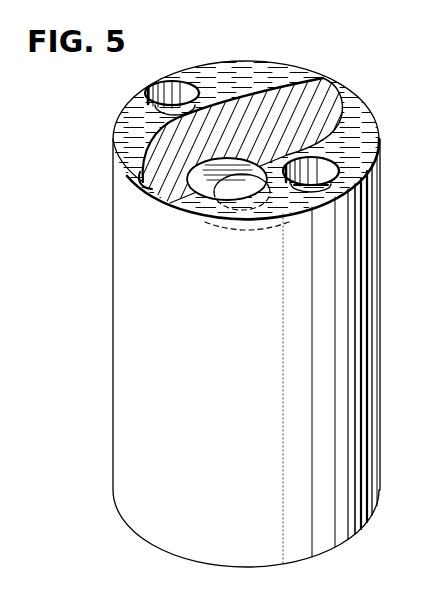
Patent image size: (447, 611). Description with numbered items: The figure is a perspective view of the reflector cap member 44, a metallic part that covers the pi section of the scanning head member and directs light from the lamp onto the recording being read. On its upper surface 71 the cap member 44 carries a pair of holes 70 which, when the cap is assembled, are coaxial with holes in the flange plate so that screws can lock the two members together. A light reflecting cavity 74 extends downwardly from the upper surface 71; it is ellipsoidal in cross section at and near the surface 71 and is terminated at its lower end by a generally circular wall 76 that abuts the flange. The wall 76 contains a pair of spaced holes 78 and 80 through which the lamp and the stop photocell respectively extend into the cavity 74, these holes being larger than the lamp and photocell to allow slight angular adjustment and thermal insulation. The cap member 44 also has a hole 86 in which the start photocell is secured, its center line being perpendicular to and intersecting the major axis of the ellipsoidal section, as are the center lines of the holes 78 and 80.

The cap member 44 is at (387, 306).
The holes 70 is at (177, 98).
The upper surface 71 is at (284, 70).
The light reflecting cavity 74 is at (328, 102).
The circular wall 76 is at (135, 139).
The hole 78 is at (237, 183).
The hole 80 is at (283, 152).
The hole 86 is at (138, 182).